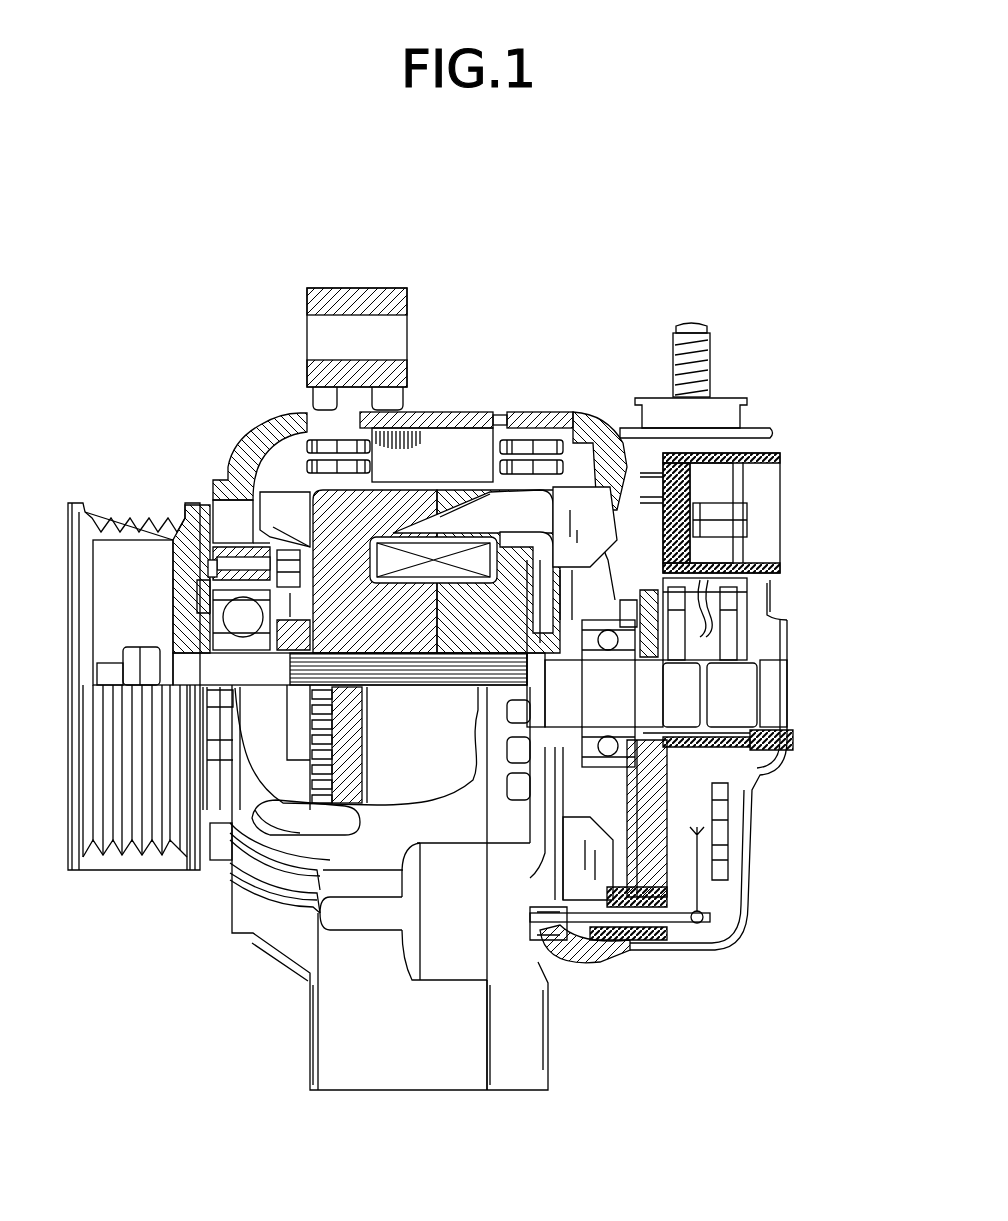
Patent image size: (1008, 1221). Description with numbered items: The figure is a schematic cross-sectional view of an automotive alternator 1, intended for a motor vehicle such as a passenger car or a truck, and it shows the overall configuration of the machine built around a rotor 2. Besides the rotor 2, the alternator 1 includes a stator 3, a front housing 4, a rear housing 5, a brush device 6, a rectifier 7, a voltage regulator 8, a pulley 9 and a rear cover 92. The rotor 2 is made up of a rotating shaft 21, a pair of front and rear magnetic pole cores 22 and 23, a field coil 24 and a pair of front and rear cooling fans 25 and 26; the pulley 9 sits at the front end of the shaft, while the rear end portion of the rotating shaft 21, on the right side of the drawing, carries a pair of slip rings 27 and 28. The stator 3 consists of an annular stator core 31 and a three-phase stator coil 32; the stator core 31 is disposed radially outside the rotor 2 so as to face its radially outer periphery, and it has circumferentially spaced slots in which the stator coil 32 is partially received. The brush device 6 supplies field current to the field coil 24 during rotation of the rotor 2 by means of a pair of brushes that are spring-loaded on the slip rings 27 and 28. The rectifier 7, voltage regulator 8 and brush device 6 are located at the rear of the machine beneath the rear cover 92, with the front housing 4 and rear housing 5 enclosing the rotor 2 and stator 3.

The automotive alternator 1 is at (694, 173).
The rotor 2 is at (283, 477).
The stator 3 is at (533, 513).
The front housing 4 is at (357, 1080).
The rear housing 5 is at (513, 1080).
The brush device 6 is at (748, 613).
The rectifier 7 is at (730, 862).
The voltage regulator 8 is at (777, 477).
The pulley 9 is at (158, 522).
The rotating shaft 21 is at (200, 665).
The front magnetic pole core 22 is at (325, 515).
The rear magnetic pole core 23 is at (563, 508).
The field coil 24 is at (437, 555).
The front cooling fan 25 is at (275, 500).
The rear cooling fan 26 is at (717, 527).
The slip ring 27 is at (683, 707).
The slip ring 28 is at (730, 697).
The stator core 31 is at (427, 432).
The stator coil 32 is at (530, 434).
The rear cover 92 is at (733, 943).